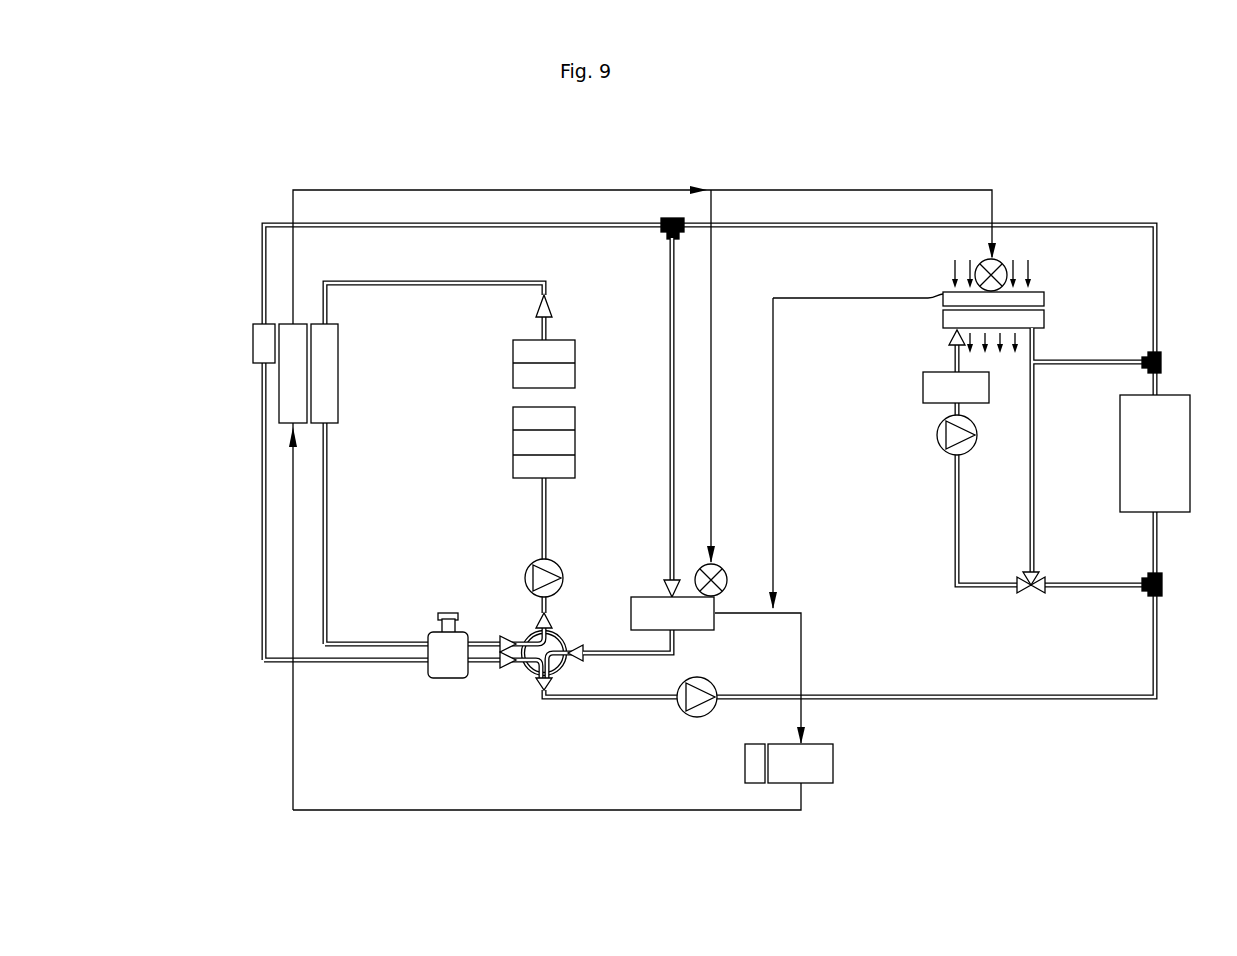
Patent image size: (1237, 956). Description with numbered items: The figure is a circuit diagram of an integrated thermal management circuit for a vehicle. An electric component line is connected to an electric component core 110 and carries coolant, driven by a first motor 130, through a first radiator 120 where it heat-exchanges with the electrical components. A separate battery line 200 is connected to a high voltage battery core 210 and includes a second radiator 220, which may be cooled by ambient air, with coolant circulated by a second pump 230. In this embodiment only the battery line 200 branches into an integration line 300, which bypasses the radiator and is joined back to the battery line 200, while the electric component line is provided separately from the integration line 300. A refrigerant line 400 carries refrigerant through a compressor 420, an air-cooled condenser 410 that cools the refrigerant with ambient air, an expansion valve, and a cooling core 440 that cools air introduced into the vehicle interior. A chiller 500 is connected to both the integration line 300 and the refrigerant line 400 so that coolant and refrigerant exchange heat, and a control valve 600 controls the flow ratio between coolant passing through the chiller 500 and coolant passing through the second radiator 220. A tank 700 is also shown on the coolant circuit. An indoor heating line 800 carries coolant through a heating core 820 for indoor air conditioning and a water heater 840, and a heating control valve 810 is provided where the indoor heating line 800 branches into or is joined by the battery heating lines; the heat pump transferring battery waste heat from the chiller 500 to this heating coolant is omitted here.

The electric component core 110 is at (513, 413).
The first radiator 120 is at (338, 418).
The first motor 130 is at (527, 567).
The battery line 200 is at (1078, 223).
The high voltage battery core 210 is at (1180, 512).
The second radiator 220 is at (253, 324).
The second pump 230 is at (682, 713).
The integration line 300 is at (670, 395).
The refrigerant line 400 is at (474, 190).
The air-cooled condenser 410 is at (285, 393).
The compressor 420 is at (833, 763).
The cooling core 440 is at (1044, 298).
The chiller 500 is at (648, 625).
The control valve 600 is at (530, 668).
The expansion tank 700 is at (443, 678).
The indoor heating line 800 is at (985, 590).
The heating control valve 810 is at (1025, 597).
The heating core 820 is at (1044, 320).
The water heater 840 is at (923, 390).